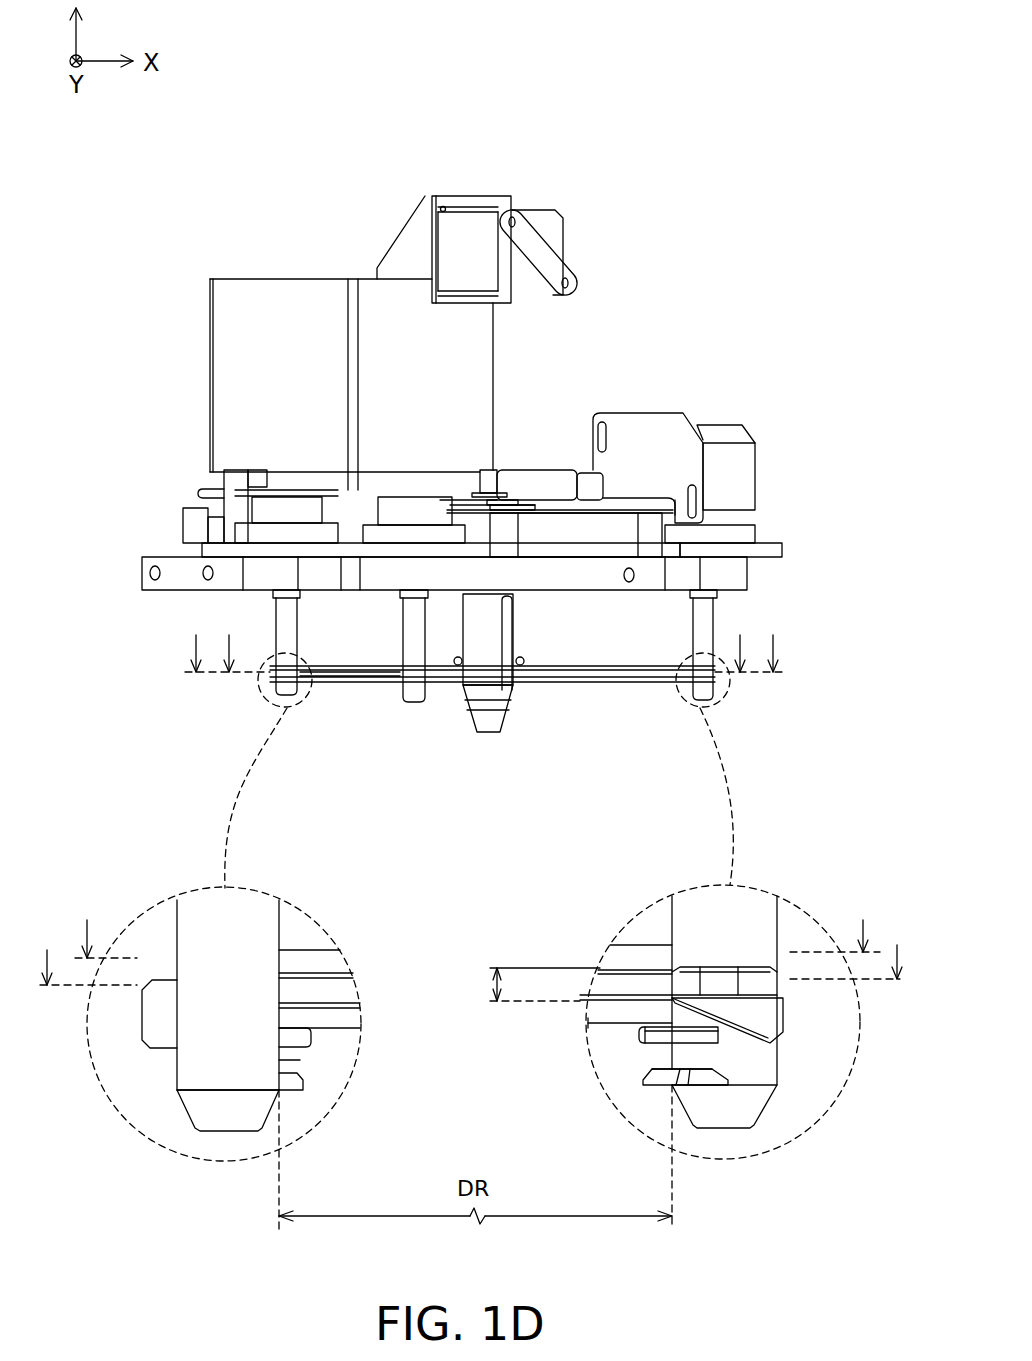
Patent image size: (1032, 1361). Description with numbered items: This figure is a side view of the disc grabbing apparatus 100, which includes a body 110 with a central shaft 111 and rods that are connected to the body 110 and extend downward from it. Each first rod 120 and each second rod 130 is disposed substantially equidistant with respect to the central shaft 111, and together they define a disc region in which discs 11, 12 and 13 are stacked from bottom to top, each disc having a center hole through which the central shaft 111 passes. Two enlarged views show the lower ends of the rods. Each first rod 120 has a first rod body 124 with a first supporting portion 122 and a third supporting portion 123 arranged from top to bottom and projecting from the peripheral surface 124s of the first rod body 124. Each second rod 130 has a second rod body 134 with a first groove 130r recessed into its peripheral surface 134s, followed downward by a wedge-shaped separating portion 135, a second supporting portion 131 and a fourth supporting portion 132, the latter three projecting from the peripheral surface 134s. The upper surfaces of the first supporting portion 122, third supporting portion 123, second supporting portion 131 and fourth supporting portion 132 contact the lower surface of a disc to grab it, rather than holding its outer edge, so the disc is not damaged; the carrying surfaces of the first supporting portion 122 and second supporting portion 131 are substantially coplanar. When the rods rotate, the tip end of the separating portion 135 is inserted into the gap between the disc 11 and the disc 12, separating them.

The disc grabbing apparatus 100 is at (355, 162).
The body 110 is at (241, 384).
The disc 11 is at (342, 682).
The disc 12 is at (386, 675).
The disc 13 is at (592, 672).
The central shaft 111 is at (490, 722).
The first rod 120 is at (158, 1096).
The first supporting portion 122 is at (313, 1041).
The third supporting portion 123 is at (290, 1085).
The first rod body 124 is at (225, 1110).
The peripheral surface 124s is at (281, 1062).
The second rod 130 is at (790, 1064).
The first groove 130r is at (748, 973).
The second supporting portion 131 is at (655, 1034).
The fourth supporting portion 132 is at (660, 1083).
The second rod body 134 is at (728, 1105).
The peripheral surface 134s is at (657, 1069).
The separating portion 135 is at (774, 1013).